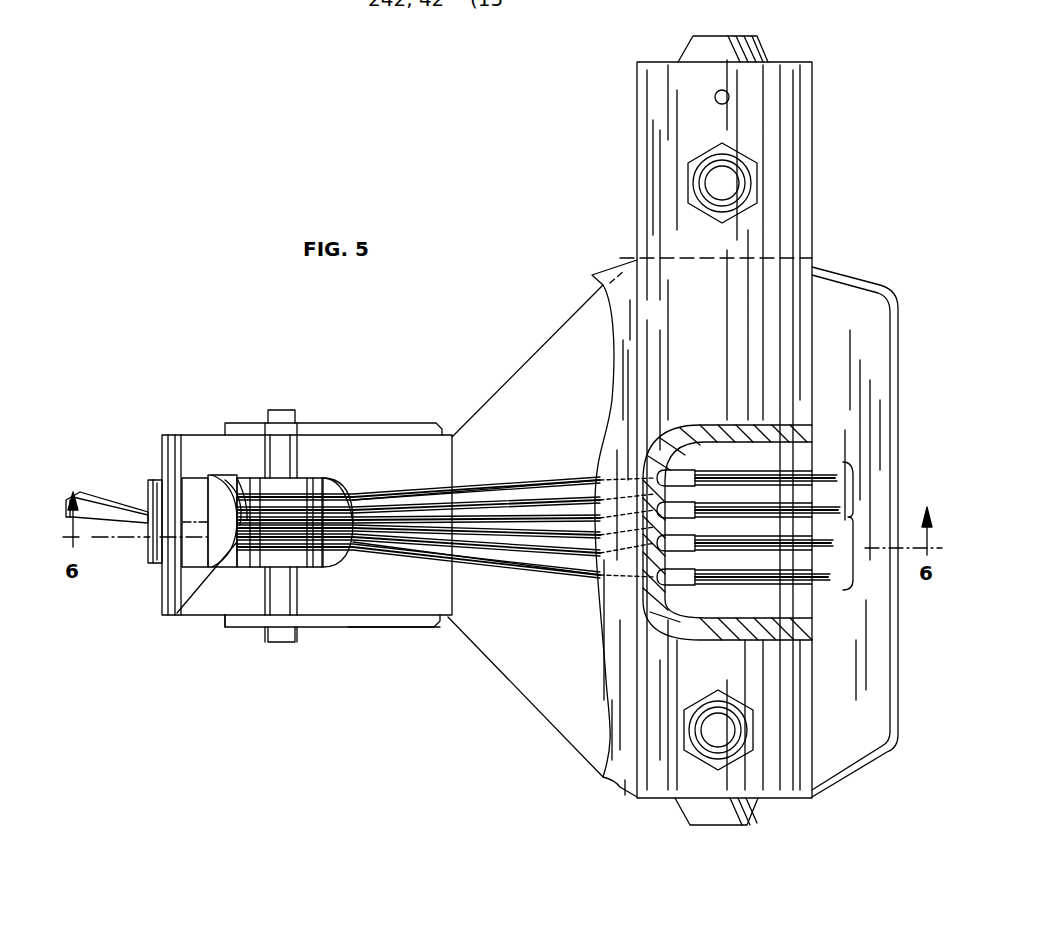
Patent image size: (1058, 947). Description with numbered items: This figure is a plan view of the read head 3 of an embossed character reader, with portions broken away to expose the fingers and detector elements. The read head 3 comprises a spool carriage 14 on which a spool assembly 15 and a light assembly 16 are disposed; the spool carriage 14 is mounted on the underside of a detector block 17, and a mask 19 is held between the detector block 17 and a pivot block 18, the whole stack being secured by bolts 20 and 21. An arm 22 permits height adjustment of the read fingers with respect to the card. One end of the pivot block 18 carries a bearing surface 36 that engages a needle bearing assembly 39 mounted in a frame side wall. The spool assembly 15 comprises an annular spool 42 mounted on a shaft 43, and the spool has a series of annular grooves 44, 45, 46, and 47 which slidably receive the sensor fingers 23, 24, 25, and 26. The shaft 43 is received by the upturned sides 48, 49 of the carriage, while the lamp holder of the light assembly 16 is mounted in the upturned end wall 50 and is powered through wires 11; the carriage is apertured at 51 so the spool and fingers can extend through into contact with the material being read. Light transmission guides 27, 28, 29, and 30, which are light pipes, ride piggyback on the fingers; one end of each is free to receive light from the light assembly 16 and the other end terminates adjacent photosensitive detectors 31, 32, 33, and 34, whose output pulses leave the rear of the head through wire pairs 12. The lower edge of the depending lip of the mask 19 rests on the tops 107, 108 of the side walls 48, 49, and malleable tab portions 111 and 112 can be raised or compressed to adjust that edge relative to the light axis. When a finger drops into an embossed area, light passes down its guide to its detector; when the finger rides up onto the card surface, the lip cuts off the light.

The read head unit 3 is at (825, 175).
The wires 11 is at (110, 503).
The wire pairs 12 is at (862, 526).
The spool carriage 14 is at (556, 409).
The spool assembly 15 is at (313, 457).
The light assembly 16 is at (149, 468).
The detector block 17 is at (800, 438).
The pivot block 18 is at (769, 247).
The mask 19 is at (851, 354).
The bolt 20 is at (731, 740).
The bolt 21 is at (734, 193).
The arm 22 is at (715, 103).
The sensor finger 23 is at (440, 547).
The sensor finger 24 is at (477, 533).
The sensor finger 25 is at (500, 520).
The sensor finger 26 is at (538, 505).
The light transmission guide 27 is at (480, 563).
The light transmission guide 28 is at (538, 545).
The light transmission guide 29 is at (413, 510).
The light transmission guide 30 is at (465, 492).
The photosensitive detector 31 is at (743, 577).
The photosensitive detector 32 is at (745, 543).
The photosensitive detector 33 is at (748, 510).
The photosensitive detector 34 is at (747, 478).
The bearing surface 36 is at (745, 38).
The needle bearing assembly 39 is at (752, 810).
The annular spool 42 is at (310, 563).
The shaft 43 is at (291, 600).
The annular groove 44 is at (177, 613).
The annular groove 45 is at (207, 473).
The annular groove 46 is at (240, 472).
The annular groove 47 is at (247, 490).
The upturned side 48 is at (348, 627).
The upturned side 49 is at (368, 428).
The upturned end wall 50 is at (178, 438).
The aperture 51 is at (335, 487).
The top of carriage side wall 107 is at (345, 430).
The top of carriage side wall 108 is at (287, 620).
The tab portion 111 is at (254, 391).
The tab portion 112 is at (225, 630).